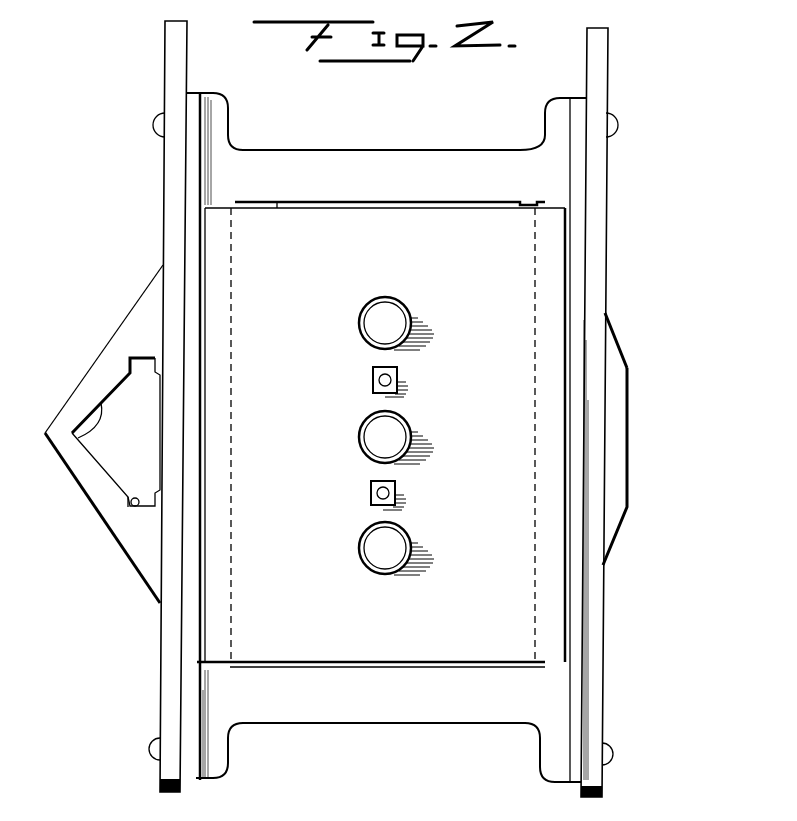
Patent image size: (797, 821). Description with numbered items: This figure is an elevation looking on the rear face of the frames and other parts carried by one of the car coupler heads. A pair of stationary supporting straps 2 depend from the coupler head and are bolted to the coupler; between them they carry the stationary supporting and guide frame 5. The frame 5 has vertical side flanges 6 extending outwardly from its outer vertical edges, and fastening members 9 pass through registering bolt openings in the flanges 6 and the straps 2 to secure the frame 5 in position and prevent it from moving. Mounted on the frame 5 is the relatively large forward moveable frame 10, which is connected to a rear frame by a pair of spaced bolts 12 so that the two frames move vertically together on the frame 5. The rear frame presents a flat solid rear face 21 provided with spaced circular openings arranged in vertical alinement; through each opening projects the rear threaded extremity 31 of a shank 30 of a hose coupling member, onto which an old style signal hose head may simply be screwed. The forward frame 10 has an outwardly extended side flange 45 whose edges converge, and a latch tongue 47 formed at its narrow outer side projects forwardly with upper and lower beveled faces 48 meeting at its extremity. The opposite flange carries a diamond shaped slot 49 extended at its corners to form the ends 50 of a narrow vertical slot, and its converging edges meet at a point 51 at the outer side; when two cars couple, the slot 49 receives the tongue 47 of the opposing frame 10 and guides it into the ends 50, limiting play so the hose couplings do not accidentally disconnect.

The stationary supporting strap 2 is at (176, 67).
The stationary supporting and guide frame 5 is at (360, 165).
The vertical side flange 6 is at (192, 220).
The fastening member 9 is at (157, 124).
The forward moveable frame 10 is at (277, 208).
The bolt 12 is at (393, 377).
The flat solid rear face 21 is at (381, 434).
The shank 30 is at (385, 303).
The rear threaded extremity 31 is at (405, 307).
The side flange 45 is at (608, 332).
The latch tongue 47 is at (627, 428).
The beveled face 48 is at (145, 311).
The diamond shaped slot 49 is at (78, 437).
The slot end 50 is at (147, 365).
The point 51 is at (45, 435).